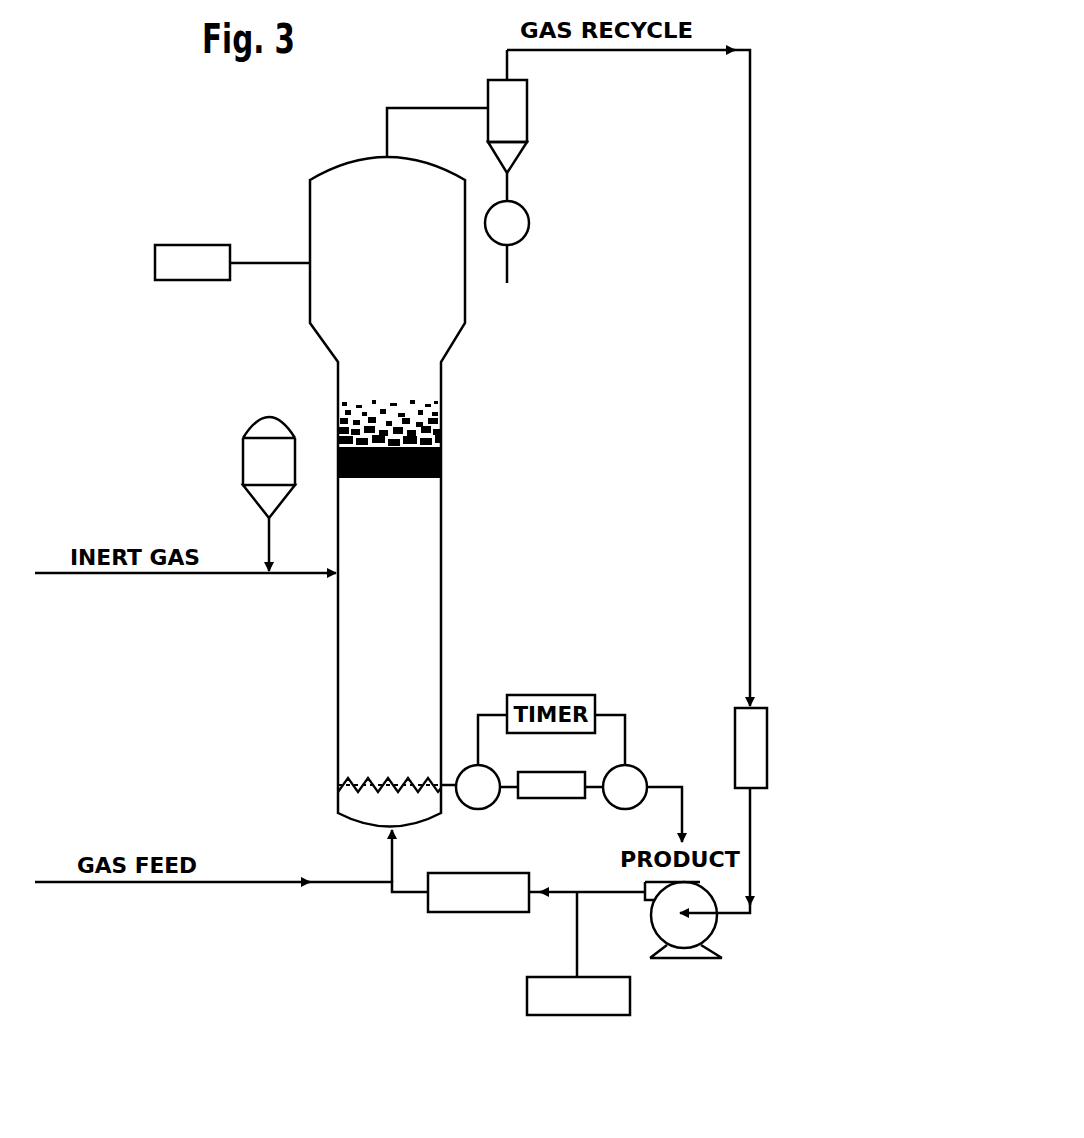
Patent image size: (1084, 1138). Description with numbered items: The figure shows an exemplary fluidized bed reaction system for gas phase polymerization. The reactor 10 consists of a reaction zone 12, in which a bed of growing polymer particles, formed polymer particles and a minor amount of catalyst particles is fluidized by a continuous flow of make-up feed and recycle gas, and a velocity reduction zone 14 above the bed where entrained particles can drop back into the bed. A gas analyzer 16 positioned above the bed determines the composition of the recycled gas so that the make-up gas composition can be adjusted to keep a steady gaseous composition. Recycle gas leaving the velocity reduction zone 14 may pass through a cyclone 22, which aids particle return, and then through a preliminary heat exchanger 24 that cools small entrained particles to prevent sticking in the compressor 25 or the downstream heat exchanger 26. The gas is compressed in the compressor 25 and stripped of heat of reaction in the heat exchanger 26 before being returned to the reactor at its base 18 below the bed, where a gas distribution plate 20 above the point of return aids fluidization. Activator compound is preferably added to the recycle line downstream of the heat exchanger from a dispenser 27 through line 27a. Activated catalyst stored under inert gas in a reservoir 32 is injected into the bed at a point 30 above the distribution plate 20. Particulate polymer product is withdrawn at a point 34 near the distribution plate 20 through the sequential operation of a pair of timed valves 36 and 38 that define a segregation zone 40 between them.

The reactor 10 is at (441, 507).
The reaction zone 12 is at (417, 563).
The velocity reduction zone 14 is at (445, 307).
The gas analyzer 16 is at (163, 268).
The point of return 18 is at (392, 830).
The gas distribution plate 20 is at (392, 783).
The cyclone 22 is at (520, 113).
The preliminary heat exchanger 24 is at (751, 752).
The compressor 25 is at (703, 923).
The heat exchanger 26 is at (435, 900).
The dispenser 27 is at (538, 997).
The line 27a is at (577, 940).
The catalyst injection point 30 is at (338, 580).
The reservoir 32 is at (252, 457).
The product withdrawal point 34 is at (447, 783).
The timed valve 36 is at (490, 805).
The timed valve 38 is at (638, 765).
The segregation zone 40 is at (557, 798).